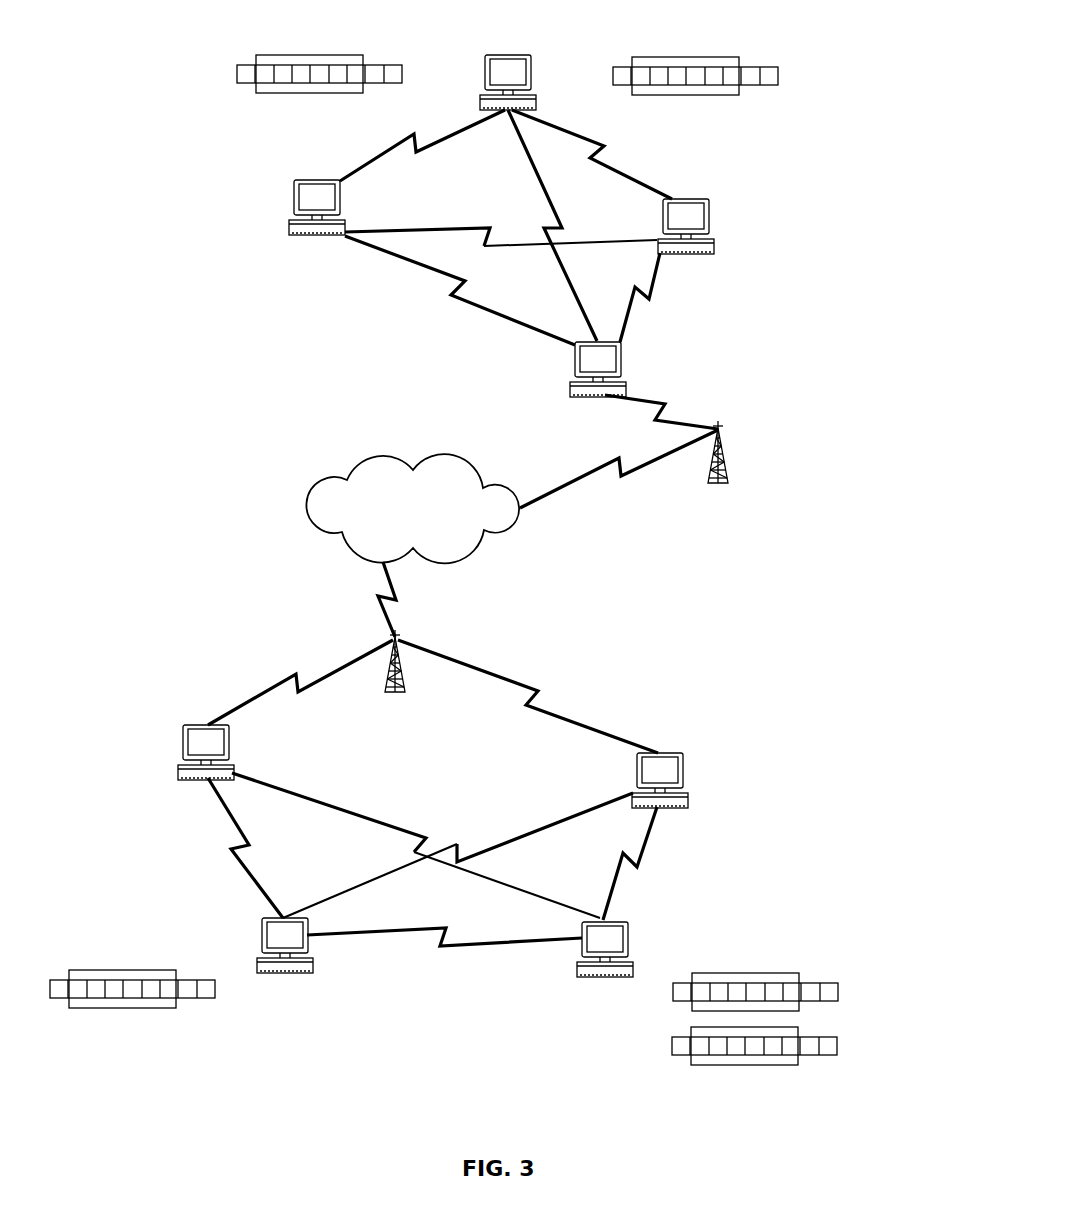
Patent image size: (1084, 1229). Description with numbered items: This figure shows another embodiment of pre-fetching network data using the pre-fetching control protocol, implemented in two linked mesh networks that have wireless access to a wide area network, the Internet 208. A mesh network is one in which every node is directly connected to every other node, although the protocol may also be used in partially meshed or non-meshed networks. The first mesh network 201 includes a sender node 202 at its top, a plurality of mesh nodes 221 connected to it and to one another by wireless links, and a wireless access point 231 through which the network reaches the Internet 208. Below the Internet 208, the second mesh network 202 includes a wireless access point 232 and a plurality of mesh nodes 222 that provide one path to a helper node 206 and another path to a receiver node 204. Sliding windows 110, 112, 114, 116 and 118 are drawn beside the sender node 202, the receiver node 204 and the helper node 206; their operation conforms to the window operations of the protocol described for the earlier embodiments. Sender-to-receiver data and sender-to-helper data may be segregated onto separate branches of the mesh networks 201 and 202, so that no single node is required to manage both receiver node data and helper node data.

The sliding window 110 is at (279, 66).
The sliding window 112 is at (713, 68).
The sliding window 114 is at (92, 980).
The sliding window 116 is at (773, 983).
The sliding window 118 is at (771, 1053).
The first mesh network 201 is at (471, 194).
The sender node / second mesh network 202 is at (528, 58).
The receiver node 204 is at (312, 958).
The helper node 206 is at (616, 921).
The Internet 208 is at (432, 518).
The mesh nodes 221 is at (296, 182).
The mesh nodes 222 is at (189, 726).
The wireless access point 231 is at (725, 456).
The wireless access point 232 is at (402, 667).